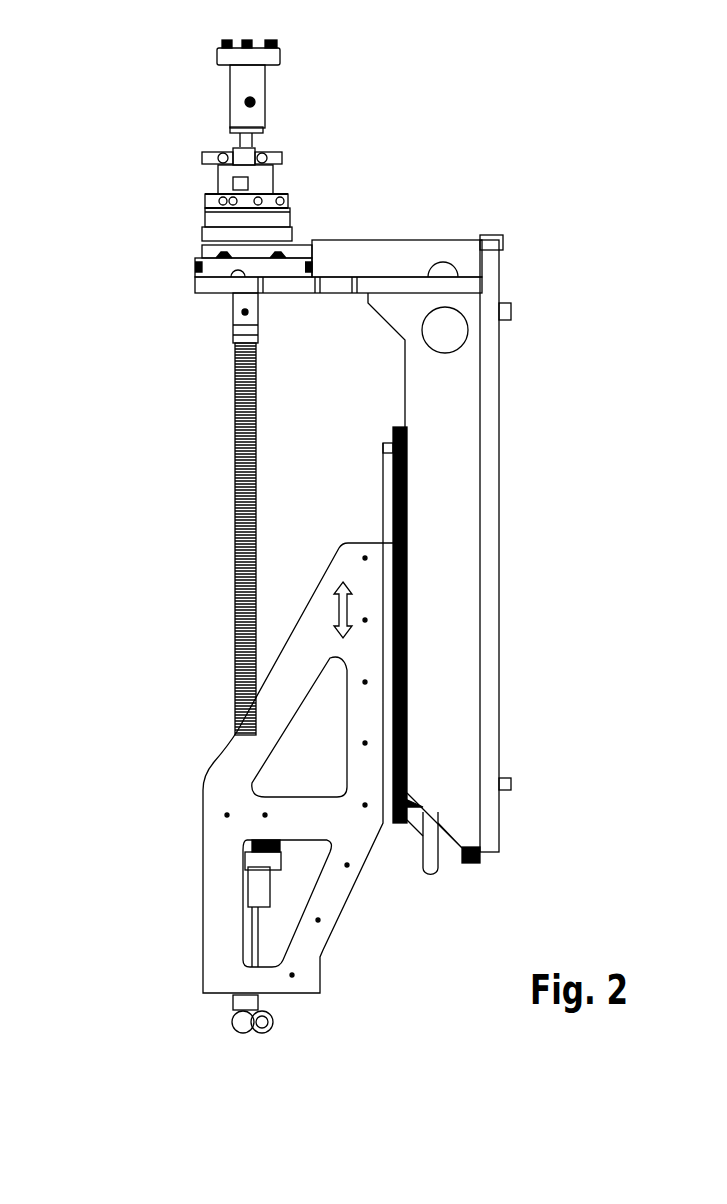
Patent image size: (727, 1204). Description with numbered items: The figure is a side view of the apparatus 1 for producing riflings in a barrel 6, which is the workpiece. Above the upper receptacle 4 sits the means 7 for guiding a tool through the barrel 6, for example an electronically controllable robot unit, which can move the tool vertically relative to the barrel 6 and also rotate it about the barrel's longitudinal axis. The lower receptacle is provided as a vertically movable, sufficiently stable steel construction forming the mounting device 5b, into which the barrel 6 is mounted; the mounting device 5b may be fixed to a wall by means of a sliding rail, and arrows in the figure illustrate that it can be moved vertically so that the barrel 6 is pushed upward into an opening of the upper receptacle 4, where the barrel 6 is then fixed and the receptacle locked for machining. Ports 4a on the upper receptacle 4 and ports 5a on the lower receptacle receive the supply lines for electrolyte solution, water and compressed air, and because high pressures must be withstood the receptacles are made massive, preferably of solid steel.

The apparatus 1 is at (449, 196).
The upper receptacle 4 is at (233, 235).
The ports 4a is at (207, 200).
The ports 5a is at (240, 1023).
The mounting device 5b is at (248, 743).
The barrel 6 is at (237, 312).
The means for guiding a tool 7 is at (227, 83).